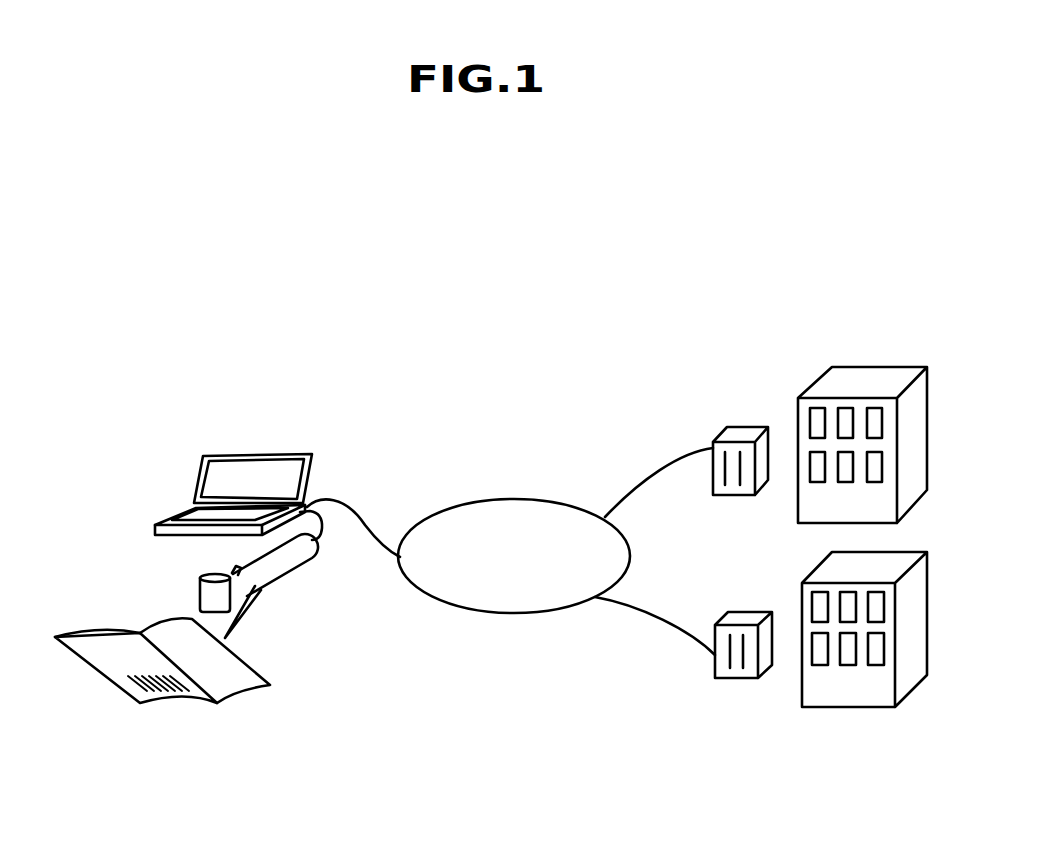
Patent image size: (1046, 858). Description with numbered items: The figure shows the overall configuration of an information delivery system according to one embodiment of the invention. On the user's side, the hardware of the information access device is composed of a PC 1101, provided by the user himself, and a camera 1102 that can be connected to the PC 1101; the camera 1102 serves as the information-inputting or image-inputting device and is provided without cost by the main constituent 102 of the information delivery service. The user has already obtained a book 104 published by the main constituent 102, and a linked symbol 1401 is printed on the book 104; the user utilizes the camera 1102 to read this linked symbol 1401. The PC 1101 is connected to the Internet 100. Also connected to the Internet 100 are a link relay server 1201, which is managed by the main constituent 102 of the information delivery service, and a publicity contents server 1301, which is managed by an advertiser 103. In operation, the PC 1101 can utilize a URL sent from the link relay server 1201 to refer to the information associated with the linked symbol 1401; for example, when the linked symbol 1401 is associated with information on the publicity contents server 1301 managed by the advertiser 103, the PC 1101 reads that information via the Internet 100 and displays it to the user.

The Internet 100 is at (460, 500).
The main constituent of the information delivery service 102 is at (818, 387).
The advertiser 103 is at (850, 708).
The book 104 is at (139, 632).
The PC 1101 is at (230, 456).
The camera 1102 is at (293, 576).
The link relay server 1201 is at (722, 432).
The publicity contents server 1301 is at (737, 680).
The linked symbol 1401 is at (158, 690).